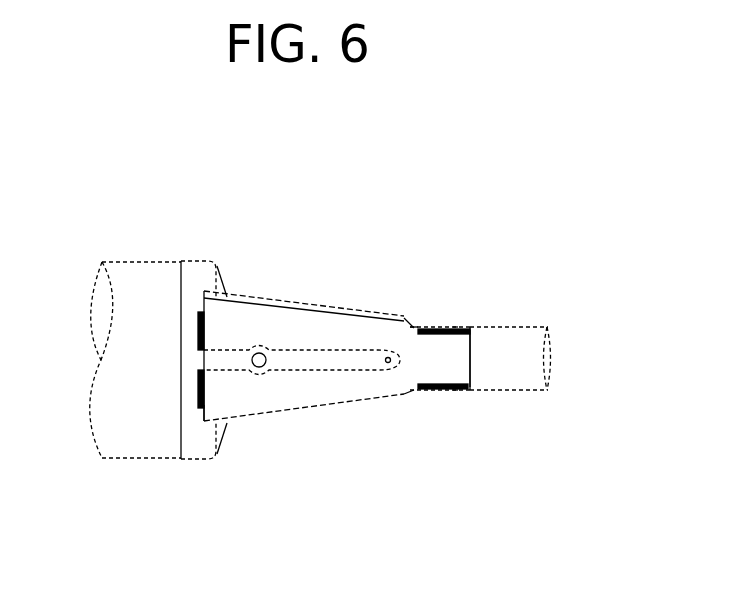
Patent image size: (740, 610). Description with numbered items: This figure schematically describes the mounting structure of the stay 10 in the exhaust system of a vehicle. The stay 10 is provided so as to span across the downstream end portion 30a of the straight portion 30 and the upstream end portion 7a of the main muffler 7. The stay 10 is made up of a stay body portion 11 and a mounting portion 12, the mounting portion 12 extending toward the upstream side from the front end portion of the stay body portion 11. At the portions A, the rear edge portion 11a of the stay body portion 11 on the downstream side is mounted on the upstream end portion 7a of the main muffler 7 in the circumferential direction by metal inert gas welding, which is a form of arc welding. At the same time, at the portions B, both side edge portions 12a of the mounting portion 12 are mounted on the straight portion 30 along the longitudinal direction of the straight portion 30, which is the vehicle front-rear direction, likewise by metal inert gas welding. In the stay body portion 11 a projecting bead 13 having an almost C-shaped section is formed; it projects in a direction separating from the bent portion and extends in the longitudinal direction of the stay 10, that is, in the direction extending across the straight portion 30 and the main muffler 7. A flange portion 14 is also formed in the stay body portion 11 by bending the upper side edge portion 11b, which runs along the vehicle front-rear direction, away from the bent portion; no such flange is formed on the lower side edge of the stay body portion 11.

The main muffler 7 is at (142, 460).
The upstream end portion 7a is at (197, 273).
The stay 10 is at (410, 505).
The stay body portion 11 is at (253, 405).
The rear edge portion 11a is at (227, 415).
The upper side edge portion 11b is at (262, 298).
The mounting portion 12 is at (422, 390).
The side edge portions 12a is at (475, 332).
The projecting bead 13 is at (331, 363).
The flange portion 14 is at (318, 298).
The straight portion 30 is at (535, 393).
The downstream end portion 30a is at (415, 328).
The portions A is at (200, 324).
The portions B is at (453, 325).